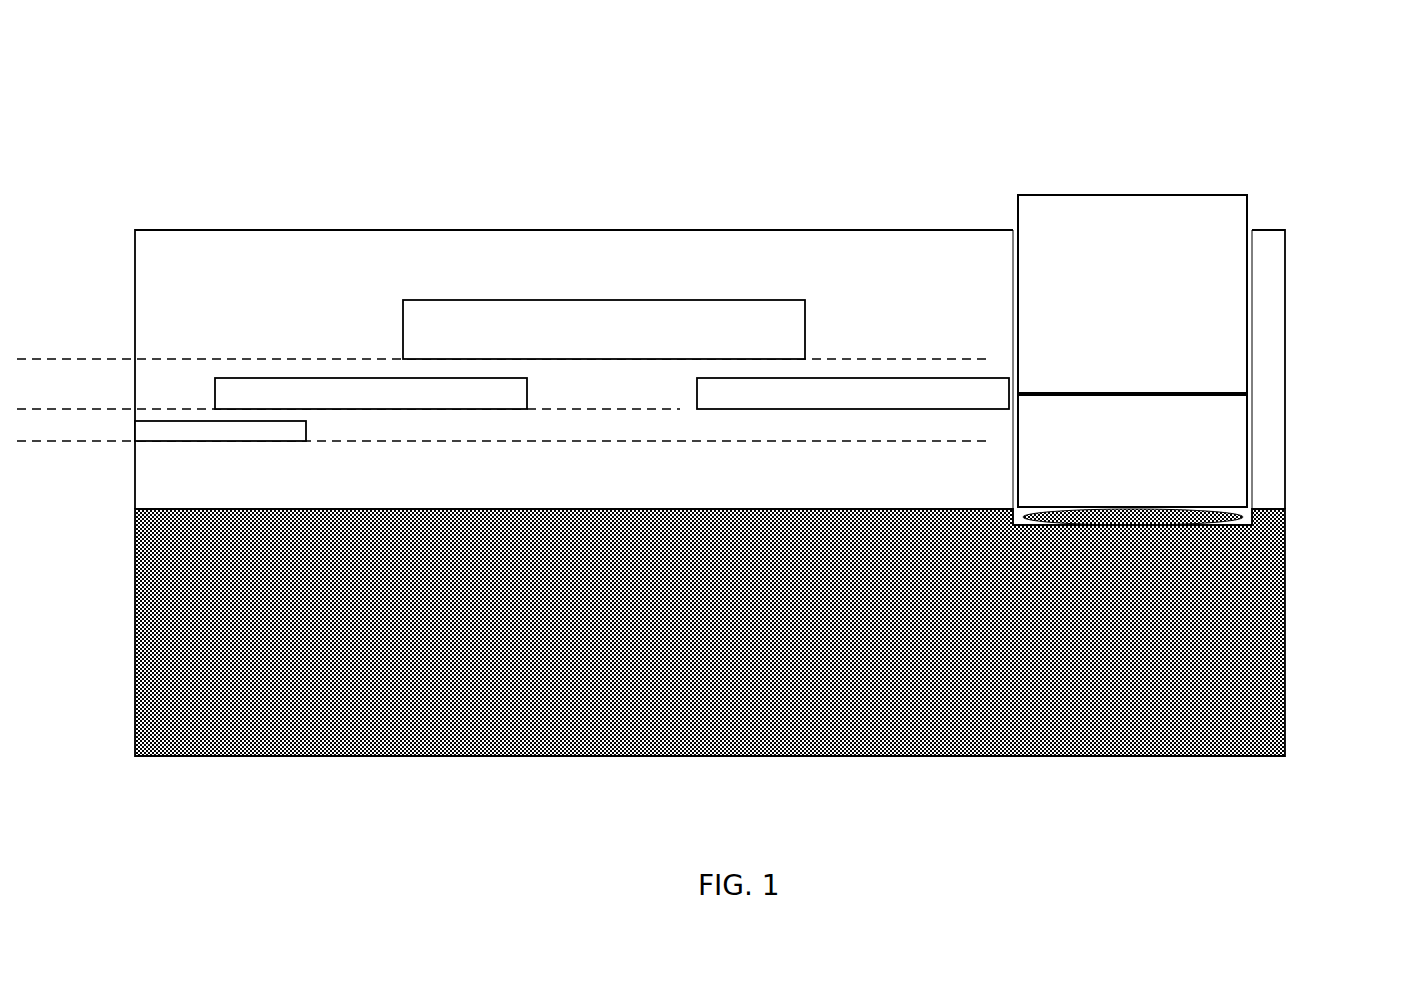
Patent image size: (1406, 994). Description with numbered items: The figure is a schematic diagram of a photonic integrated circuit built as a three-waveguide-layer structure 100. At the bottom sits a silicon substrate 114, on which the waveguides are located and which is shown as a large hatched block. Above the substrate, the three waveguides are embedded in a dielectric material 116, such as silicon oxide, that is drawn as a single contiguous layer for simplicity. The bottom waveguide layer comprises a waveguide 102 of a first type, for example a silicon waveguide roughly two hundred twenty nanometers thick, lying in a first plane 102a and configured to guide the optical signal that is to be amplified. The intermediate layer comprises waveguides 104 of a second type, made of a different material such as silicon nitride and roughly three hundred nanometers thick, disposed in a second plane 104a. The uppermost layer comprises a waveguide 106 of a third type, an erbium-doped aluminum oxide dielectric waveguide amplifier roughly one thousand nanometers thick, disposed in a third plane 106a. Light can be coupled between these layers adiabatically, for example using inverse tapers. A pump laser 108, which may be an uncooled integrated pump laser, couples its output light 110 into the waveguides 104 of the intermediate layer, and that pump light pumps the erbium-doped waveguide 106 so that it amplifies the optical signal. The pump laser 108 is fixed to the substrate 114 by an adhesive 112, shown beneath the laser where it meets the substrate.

The three-waveguide-layer structure 100 is at (404, 133).
The waveguide of a first type 102 is at (262, 428).
The first plane 102a is at (125, 442).
The waveguide of a second type 104 is at (277, 394).
The second plane 104a is at (127, 408).
The waveguide of a third type 106 is at (513, 299).
The third plane 106a is at (120, 358).
The pump laser 108 is at (1193, 235).
The output light 110 is at (1178, 398).
The adhesive 112 is at (1152, 517).
The substrate 114 is at (1142, 731).
The dielectric material 116 is at (710, 377).